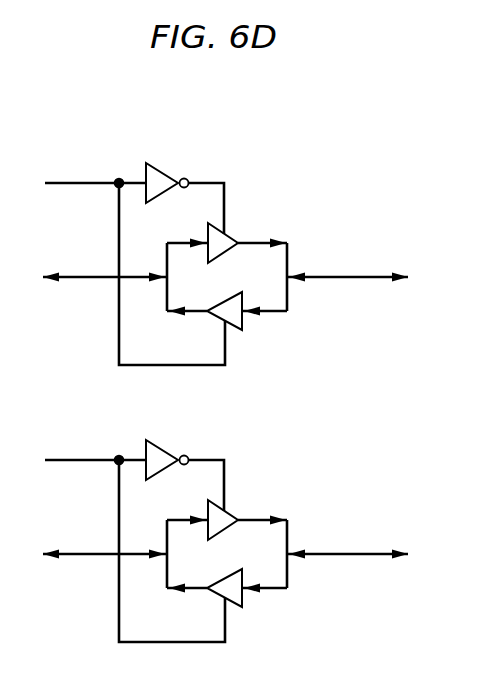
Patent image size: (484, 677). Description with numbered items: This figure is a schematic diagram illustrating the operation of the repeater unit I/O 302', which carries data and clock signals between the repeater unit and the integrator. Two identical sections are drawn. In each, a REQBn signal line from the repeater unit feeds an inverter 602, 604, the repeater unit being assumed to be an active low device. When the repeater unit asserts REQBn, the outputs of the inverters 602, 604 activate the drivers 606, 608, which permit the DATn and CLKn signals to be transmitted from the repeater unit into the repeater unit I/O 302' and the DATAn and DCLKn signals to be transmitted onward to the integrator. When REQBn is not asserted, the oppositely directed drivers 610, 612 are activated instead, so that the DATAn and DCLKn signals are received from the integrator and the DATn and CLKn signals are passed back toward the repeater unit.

The repeater unit I/O 302' is at (241, 371).
The inverter 602 is at (163, 170).
The inverter 604 is at (167, 441).
The driver 606 is at (228, 235).
The driver 608 is at (248, 508).
The driver 610 is at (240, 325).
The driver 612 is at (252, 606).